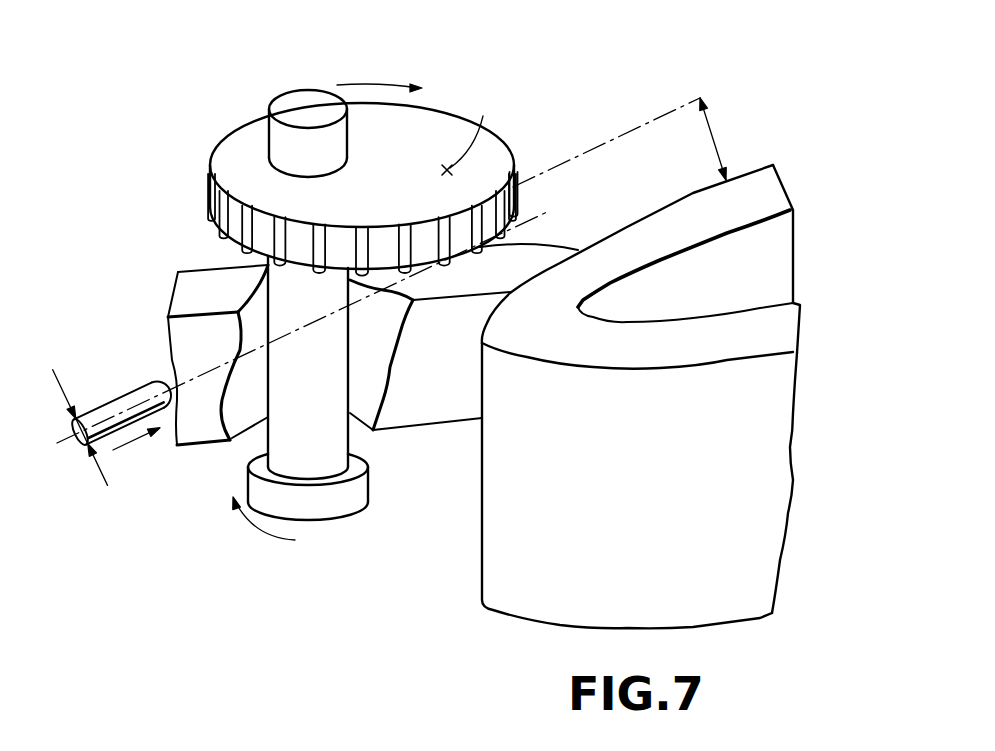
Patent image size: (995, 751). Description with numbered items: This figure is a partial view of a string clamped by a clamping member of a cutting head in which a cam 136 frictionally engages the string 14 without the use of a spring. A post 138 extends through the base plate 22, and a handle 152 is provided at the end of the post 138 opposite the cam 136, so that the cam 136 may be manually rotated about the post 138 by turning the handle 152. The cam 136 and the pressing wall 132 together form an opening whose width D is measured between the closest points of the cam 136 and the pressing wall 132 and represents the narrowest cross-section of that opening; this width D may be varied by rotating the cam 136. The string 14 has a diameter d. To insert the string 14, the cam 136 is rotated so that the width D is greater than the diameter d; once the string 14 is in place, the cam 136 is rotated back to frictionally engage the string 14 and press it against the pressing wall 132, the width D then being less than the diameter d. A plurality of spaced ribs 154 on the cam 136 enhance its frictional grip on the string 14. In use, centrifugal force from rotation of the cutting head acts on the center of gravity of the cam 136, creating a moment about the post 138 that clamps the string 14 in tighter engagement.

The cam 136 is at (430, 123).
The spaced ribs 154 is at (516, 185).
The post 138 is at (287, 290).
The handle 152 is at (348, 517).
The base plate 22 is at (178, 302).
The string 14 is at (147, 383).
The diameter d is at (75, 432).
The width D is at (708, 143).
The pressing wall 132 is at (755, 168).